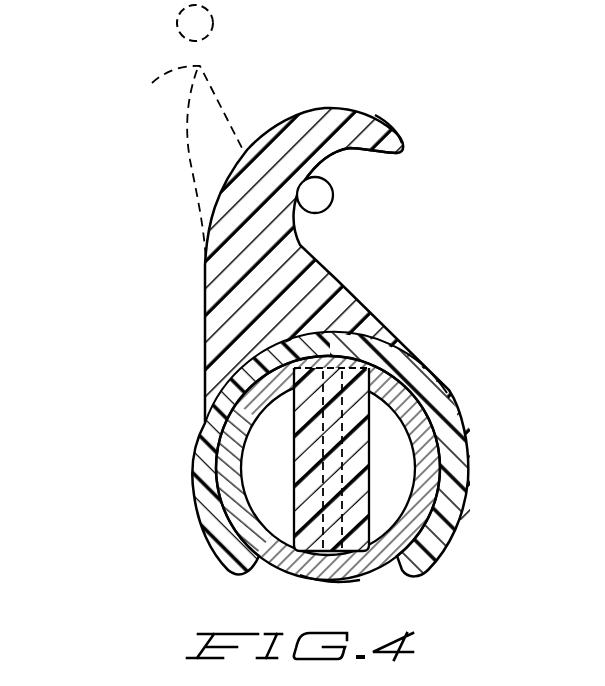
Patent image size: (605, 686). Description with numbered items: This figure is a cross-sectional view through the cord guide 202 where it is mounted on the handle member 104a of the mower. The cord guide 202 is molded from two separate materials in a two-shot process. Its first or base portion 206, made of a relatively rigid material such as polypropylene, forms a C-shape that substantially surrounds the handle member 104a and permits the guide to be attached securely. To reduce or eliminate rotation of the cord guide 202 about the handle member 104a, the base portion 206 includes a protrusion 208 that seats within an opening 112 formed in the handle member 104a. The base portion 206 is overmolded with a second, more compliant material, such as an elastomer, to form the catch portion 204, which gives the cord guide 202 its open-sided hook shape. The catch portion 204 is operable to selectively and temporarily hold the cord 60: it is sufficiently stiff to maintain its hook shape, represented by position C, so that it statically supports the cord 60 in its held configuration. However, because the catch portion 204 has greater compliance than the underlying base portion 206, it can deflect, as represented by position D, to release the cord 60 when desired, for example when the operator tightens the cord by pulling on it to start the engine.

The cord 60 is at (177, 28).
The deflected position of the cord guide D is at (152, 83).
The hook-shape position of the cord guide C is at (398, 133).
The catch portion 204 is at (361, 152).
The cord guide 202 is at (457, 400).
The opening 112 is at (365, 378).
The base portion 206 is at (192, 477).
The protrusion 208 is at (369, 511).
The handle member 104a is at (363, 575).